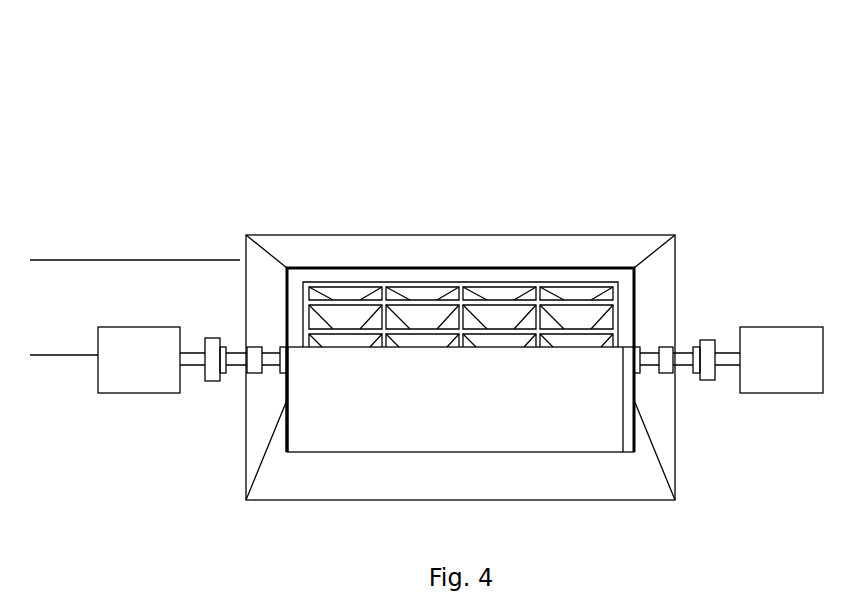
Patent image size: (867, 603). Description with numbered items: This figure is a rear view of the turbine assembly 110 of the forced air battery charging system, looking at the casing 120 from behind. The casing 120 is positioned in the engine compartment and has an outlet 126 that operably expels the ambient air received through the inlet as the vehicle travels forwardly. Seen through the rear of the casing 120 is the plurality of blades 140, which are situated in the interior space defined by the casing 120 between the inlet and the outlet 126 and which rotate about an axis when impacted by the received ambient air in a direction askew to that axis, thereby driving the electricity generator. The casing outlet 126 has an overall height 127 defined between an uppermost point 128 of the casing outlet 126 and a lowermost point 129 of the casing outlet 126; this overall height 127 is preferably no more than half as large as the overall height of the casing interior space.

The turbine assembly 110 is at (493, 90).
The casing 120 is at (525, 428).
The casing outlet 126 is at (295, 323).
The overall height of the casing outlet 127 is at (54, 263).
The uppermost point of the casing outlet 128 is at (348, 267).
The lowermost point of the casing outlet 129 is at (623, 452).
The plurality of blades 140 is at (575, 277).